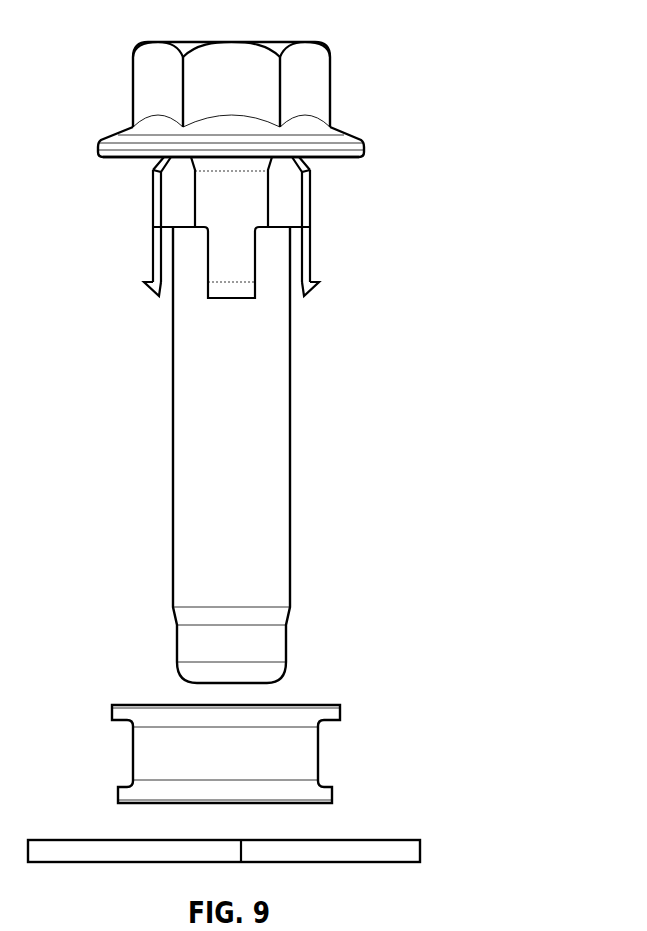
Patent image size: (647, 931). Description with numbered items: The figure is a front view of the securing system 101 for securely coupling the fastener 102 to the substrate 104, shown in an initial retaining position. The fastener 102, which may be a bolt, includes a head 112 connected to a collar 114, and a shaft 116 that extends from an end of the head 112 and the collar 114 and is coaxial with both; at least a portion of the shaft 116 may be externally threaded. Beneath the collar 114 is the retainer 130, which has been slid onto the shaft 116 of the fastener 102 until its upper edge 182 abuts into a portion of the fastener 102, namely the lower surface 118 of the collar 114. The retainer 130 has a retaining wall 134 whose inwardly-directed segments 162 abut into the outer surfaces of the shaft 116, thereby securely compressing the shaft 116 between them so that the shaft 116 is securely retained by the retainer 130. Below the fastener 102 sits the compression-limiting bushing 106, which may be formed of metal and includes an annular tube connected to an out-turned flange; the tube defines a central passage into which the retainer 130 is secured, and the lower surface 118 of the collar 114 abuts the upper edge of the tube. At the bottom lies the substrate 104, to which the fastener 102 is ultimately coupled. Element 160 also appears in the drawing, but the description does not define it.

The securing system 101 is at (462, 44).
The fastener 102 is at (292, 388).
The substrate 104 is at (393, 839).
The compression-limiting bushing 106 is at (318, 752).
The head 112 is at (330, 59).
The collar 114 is at (350, 133).
The shaft 116 is at (290, 493).
The lower surface 118 is at (328, 158).
The retainer 130 is at (310, 202).
The retaining wall 134 is at (152, 196).
The retention clip 160 is at (227, 212).
The inwardly-directed segments 162 is at (178, 208).
The upper edge 182 is at (165, 160).